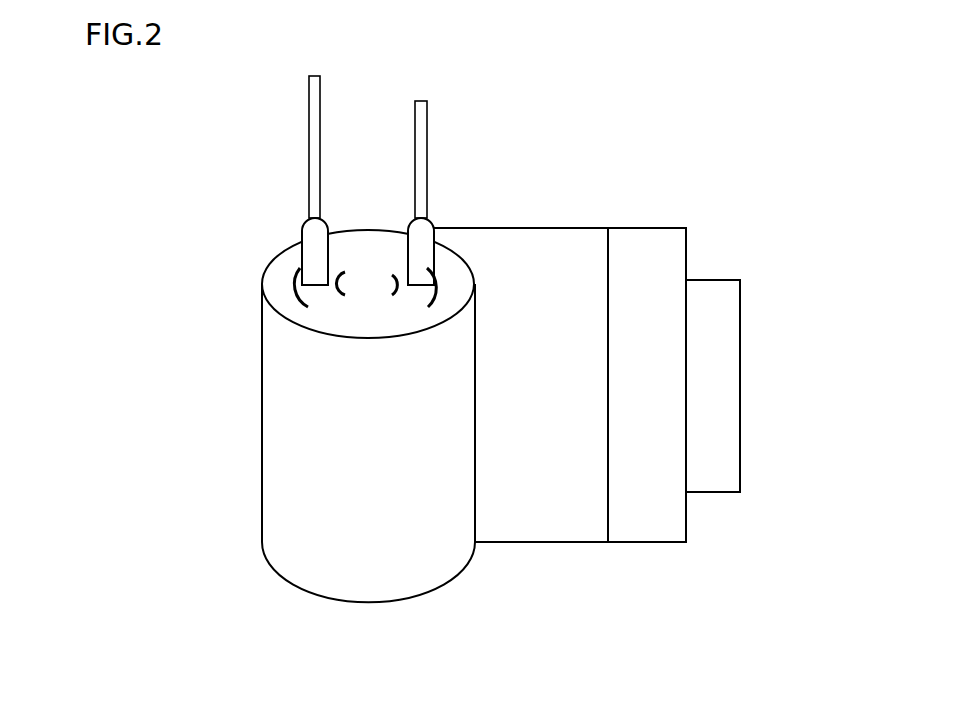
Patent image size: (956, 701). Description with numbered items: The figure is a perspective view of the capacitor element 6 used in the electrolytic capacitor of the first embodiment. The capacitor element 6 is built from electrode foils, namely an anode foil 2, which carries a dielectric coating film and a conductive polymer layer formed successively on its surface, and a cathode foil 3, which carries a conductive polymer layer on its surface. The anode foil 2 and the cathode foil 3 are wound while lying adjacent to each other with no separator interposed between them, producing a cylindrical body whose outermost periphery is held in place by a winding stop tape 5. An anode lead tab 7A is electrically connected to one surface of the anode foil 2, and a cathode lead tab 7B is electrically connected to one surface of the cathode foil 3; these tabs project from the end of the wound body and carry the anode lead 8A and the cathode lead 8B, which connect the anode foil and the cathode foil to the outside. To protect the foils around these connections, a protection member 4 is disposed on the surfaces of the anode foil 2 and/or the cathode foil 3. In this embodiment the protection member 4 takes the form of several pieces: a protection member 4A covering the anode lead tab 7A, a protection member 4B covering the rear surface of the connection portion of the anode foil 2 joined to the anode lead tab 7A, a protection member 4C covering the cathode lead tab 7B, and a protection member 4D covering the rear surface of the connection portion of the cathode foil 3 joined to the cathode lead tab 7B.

The anode foil 2 is at (568, 512).
The cathode foil 3 is at (675, 516).
The protection member 4 is at (190, 301).
The protection member 4A is at (298, 287).
The protection member 4B is at (337, 287).
The protection member 4C is at (427, 297).
The protection member 4D is at (390, 291).
The winding stop tape 5 is at (728, 382).
The capacitor element 6 is at (378, 60).
The anode lead tab 7A is at (313, 238).
The cathode lead tab 7B is at (430, 237).
The anode lead 8A is at (317, 122).
The cathode lead 8B is at (422, 113).